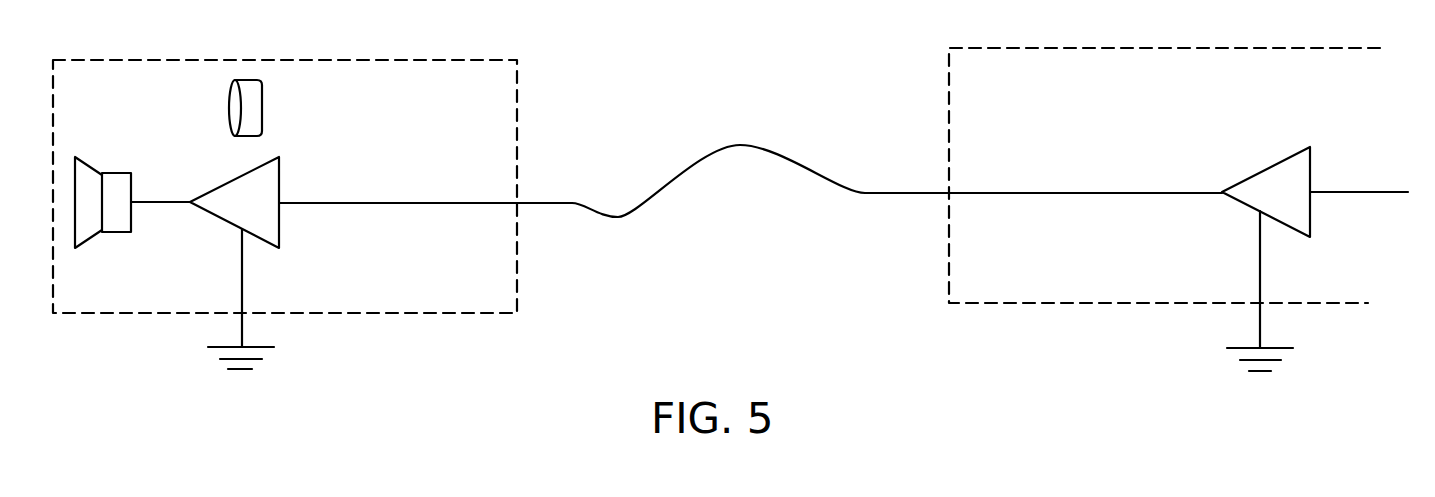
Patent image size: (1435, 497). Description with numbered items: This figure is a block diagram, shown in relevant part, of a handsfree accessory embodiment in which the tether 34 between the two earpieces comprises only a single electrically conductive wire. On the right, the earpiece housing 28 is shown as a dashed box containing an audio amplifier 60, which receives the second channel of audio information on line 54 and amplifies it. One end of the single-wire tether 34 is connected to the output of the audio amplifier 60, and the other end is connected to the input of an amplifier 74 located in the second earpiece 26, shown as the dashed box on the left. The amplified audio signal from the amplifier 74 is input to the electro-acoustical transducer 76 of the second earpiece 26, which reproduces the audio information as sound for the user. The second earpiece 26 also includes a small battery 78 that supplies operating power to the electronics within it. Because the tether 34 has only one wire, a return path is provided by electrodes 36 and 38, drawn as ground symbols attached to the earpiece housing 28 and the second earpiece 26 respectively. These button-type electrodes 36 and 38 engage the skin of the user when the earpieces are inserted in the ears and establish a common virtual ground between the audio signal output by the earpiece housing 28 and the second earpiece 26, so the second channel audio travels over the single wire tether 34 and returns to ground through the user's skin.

The second earpiece 26 is at (285, 156).
The earpiece housing 28 is at (1164, 152).
The tether 34 is at (897, 161).
The electrode 36 is at (1182, 312).
The electrode 38 is at (177, 328).
The line 54 is at (1366, 221).
The audio amplifier 60 is at (1242, 235).
The audio amplifier 74 is at (381, 252).
The electro-acoustical transducer 76 is at (132, 180).
The battery 78 is at (294, 108).